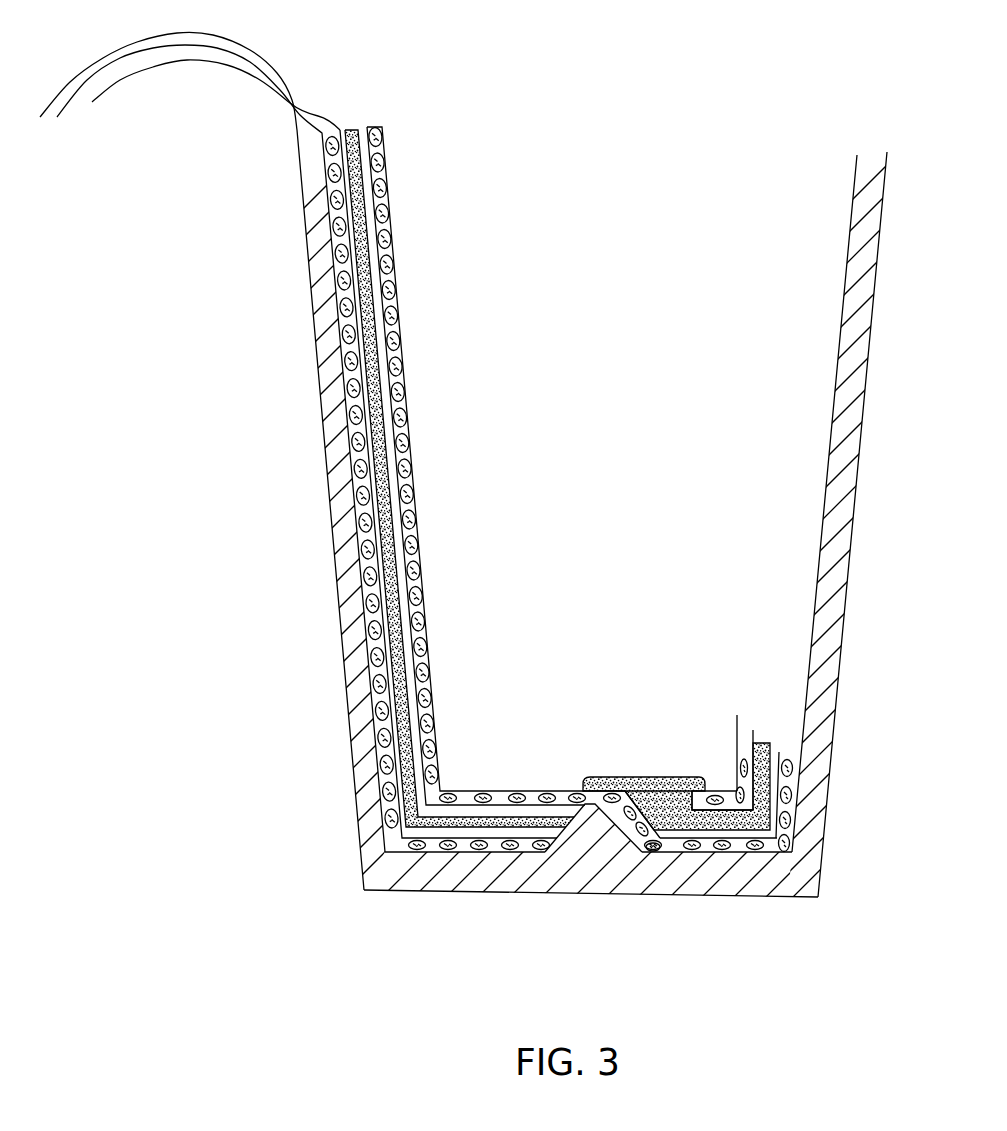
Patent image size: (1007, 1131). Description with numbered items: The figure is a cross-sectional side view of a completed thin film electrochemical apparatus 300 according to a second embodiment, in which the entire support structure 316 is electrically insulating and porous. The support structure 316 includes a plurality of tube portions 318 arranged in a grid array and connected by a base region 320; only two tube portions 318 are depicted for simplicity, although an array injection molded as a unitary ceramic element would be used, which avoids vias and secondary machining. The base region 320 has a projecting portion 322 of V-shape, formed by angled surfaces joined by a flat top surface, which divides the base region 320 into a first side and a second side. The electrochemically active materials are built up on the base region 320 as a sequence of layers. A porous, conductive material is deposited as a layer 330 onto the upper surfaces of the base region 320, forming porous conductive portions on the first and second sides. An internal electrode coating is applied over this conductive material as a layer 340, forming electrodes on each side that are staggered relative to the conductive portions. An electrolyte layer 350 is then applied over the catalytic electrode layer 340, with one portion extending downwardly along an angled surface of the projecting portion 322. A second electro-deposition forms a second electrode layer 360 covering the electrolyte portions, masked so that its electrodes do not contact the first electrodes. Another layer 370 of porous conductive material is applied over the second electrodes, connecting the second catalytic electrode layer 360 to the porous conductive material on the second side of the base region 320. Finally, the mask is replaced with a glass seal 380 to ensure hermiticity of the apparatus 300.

The thin film electrochemical apparatus 300 is at (762, 110).
The support structure 316 is at (387, 877).
The tube portions 318 is at (298, 103).
The base region 320 is at (657, 885).
The projecting portion 322 is at (596, 824).
The porous conductive material layer 330 is at (488, 851).
The internal electrode coating layer 340 is at (497, 835).
The electrolyte layer 350 is at (473, 818).
The second electrode layer 360 is at (752, 784).
The porous conductive material layer 370 is at (548, 792).
The glass seal 380 is at (668, 777).